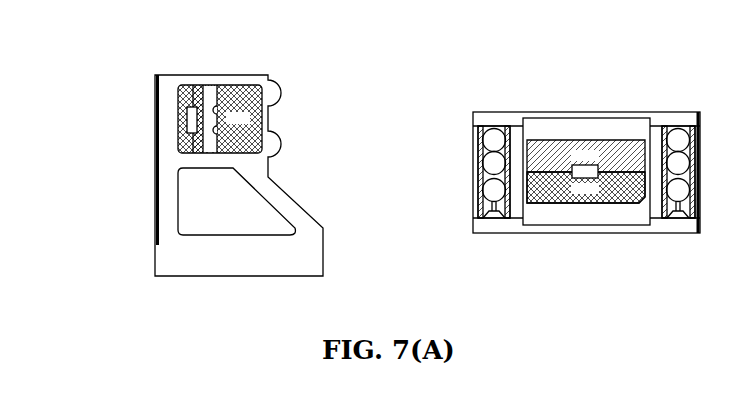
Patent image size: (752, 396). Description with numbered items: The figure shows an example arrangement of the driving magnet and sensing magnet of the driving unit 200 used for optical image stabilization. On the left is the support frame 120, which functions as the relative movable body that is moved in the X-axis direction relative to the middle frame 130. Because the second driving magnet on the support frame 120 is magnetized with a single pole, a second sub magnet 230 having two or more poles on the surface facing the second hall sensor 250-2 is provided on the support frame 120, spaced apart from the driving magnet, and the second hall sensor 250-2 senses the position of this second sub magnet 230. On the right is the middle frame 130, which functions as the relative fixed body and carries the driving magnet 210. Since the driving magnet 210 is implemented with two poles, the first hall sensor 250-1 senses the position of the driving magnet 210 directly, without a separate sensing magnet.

The support frame 120 is at (167, 98).
The driving unit 200 is at (238, 86).
The second sub magnet 230 is at (182, 86).
The second hall sensor 250-2 is at (187, 125).
The middle frame 130 is at (538, 127).
The driving magnet 210 is at (553, 205).
The first hall sensor 250-1 is at (593, 172).